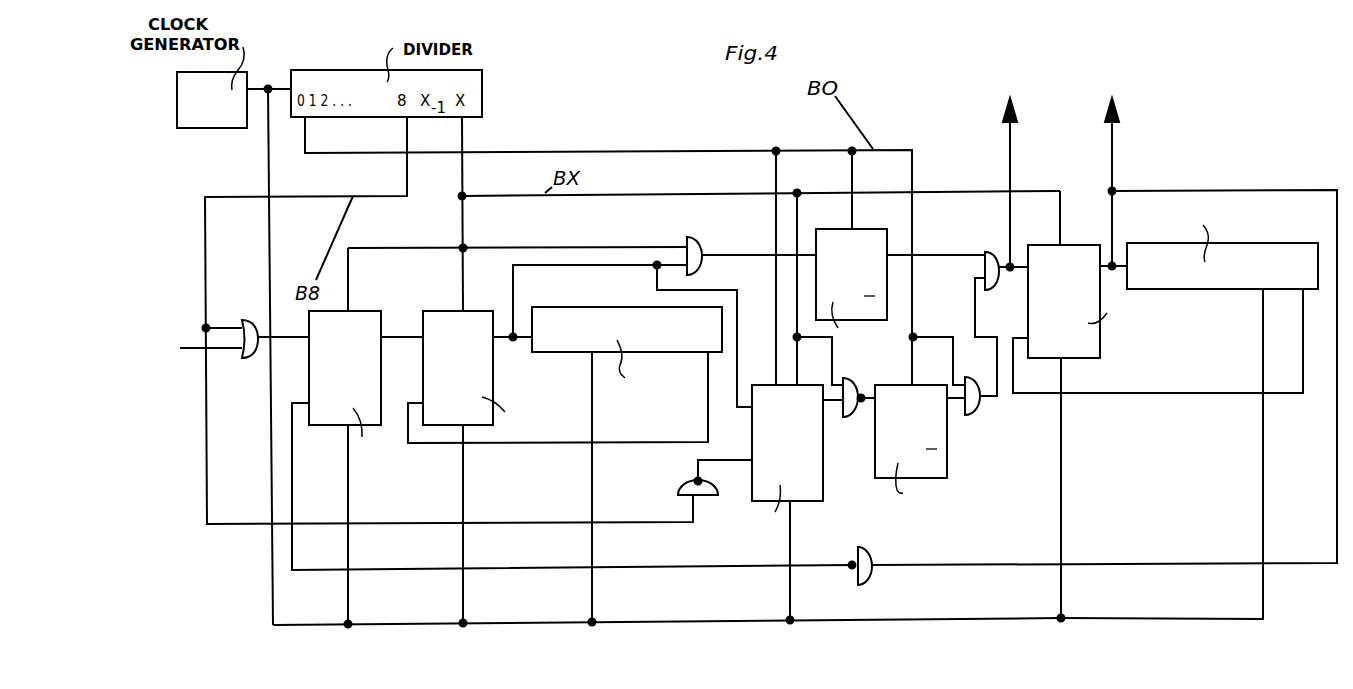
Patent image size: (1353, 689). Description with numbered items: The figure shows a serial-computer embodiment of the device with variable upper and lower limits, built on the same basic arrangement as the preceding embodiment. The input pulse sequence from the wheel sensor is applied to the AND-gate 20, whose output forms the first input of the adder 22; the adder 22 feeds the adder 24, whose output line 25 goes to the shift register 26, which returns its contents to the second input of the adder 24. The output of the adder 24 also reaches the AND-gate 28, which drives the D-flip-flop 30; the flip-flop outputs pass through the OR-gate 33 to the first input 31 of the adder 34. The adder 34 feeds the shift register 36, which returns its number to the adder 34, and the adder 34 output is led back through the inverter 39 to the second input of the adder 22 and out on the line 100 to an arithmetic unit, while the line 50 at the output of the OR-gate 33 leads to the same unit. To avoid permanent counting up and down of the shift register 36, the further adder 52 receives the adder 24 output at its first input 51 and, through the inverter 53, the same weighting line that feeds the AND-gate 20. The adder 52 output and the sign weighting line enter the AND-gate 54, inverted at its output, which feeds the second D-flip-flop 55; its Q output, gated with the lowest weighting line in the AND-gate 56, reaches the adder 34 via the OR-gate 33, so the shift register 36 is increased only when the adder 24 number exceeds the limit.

The AND-gate 20 is at (248, 320).
The adder 22 is at (382, 360).
The adder 24 is at (495, 353).
The output line 25 is at (588, 267).
The shift register 26 is at (663, 352).
The AND-gate 28 is at (701, 243).
The D-flip-flop 30 is at (888, 270).
The first input 31 is at (905, 252).
The OR-gate 33 is at (1000, 270).
The adder 34 is at (1102, 345).
The shift register 36 is at (1257, 242).
The inverter 39 is at (864, 547).
The line 50 is at (1006, 170).
The first input 51 is at (737, 387).
The adder 52 is at (823, 447).
The inverter 53 is at (685, 482).
The AND-gate 54 is at (848, 381).
The second D-flip-flop 55 is at (949, 447).
The AND-gate 56 is at (980, 425).
The line 100 is at (1104, 319).